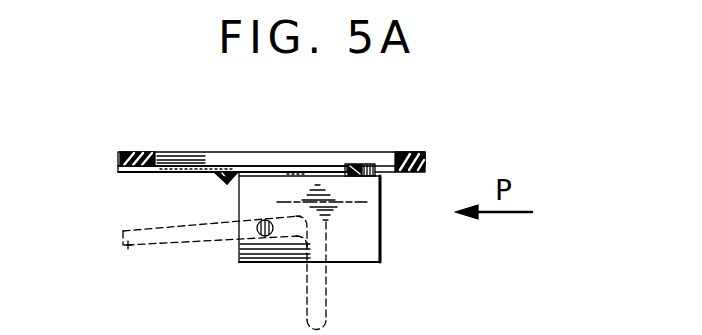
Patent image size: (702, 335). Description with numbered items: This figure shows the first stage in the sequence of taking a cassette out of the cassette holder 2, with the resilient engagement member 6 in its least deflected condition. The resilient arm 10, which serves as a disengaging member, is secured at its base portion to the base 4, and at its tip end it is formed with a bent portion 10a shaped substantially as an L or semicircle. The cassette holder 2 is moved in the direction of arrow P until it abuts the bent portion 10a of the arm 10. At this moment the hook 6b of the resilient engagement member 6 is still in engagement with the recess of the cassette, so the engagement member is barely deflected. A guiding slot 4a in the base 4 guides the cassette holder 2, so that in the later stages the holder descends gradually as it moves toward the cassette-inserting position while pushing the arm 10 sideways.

The cassette holder 2 is at (372, 250).
The base 4 is at (410, 157).
The guiding slot 4a is at (132, 253).
The resilient engagement member 6 is at (313, 152).
The hook 6b is at (363, 164).
The resilient arm 10 is at (203, 152).
The bent portion 10a is at (232, 184).